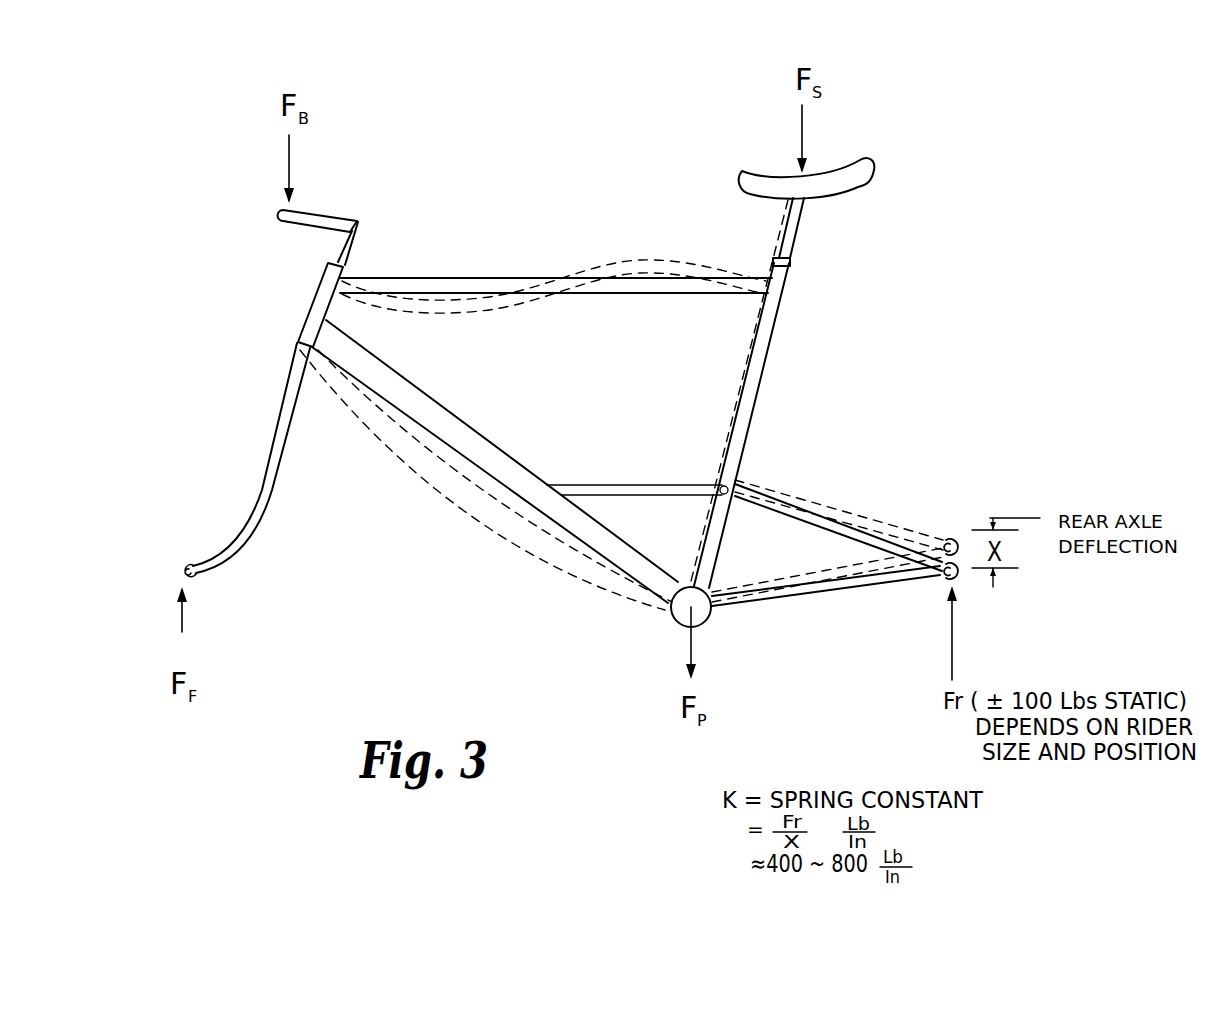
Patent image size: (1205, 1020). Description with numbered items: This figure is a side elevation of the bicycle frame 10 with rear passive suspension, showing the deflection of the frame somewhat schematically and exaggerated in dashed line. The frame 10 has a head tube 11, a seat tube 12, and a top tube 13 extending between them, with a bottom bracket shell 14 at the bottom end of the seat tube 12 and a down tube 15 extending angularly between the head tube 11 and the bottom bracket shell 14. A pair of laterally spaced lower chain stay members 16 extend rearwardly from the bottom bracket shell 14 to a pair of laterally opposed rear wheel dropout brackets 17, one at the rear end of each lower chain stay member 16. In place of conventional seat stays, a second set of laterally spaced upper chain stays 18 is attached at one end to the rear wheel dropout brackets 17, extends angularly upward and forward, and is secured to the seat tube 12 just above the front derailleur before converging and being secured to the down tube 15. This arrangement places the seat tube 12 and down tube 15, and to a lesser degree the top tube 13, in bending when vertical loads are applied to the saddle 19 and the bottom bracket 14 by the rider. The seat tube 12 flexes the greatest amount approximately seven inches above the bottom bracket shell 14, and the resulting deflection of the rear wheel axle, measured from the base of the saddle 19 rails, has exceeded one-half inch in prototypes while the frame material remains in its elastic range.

The bicycle frame 10 is at (858, 378).
The head tube 11 is at (316, 299).
The seat tube 12 is at (778, 330).
The top tube 13 is at (515, 278).
The bottom bracket shell 14 is at (668, 617).
The down tube 15 is at (432, 398).
The lower chain stay members 16 is at (830, 596).
The rear wheel dropout brackets 17 is at (940, 575).
The upper chain stays 18 is at (845, 520).
The saddle 19 is at (873, 166).